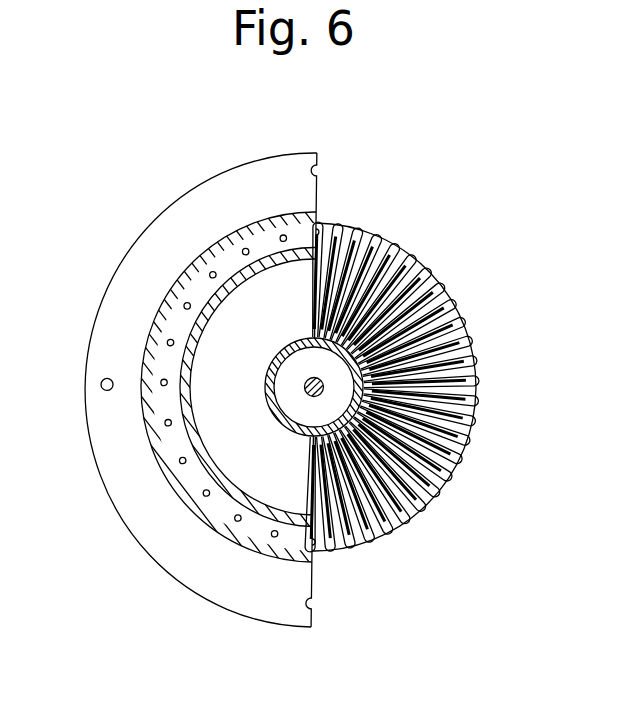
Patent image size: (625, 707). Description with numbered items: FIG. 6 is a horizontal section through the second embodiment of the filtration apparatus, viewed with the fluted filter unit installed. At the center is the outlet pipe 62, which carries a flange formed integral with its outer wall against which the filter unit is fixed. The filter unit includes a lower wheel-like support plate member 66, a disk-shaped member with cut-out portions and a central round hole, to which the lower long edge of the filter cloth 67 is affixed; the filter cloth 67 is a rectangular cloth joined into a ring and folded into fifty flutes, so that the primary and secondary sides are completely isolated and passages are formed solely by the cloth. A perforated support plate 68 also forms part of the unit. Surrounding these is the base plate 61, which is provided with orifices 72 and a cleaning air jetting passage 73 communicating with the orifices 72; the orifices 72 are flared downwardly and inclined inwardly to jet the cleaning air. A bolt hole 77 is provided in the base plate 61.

The base plate 61 is at (146, 237).
The outlet pipe 62 is at (265, 398).
The lower wheel-like support plate member 66 is at (419, 388).
The filter cloth 67 is at (476, 381).
The perforated support plate 68 is at (350, 397).
The orifices 72 is at (161, 383).
The cleaning air jetting passage 73 is at (192, 327).
The bolt hole 77 is at (101, 388).